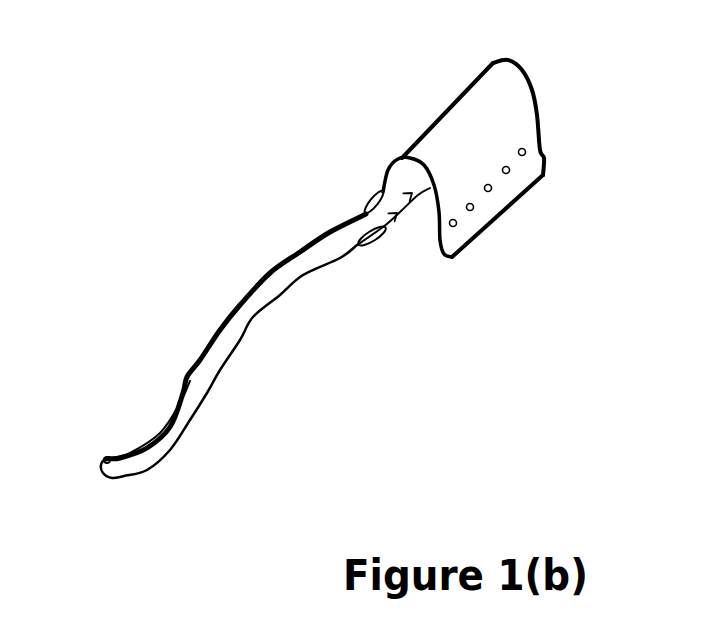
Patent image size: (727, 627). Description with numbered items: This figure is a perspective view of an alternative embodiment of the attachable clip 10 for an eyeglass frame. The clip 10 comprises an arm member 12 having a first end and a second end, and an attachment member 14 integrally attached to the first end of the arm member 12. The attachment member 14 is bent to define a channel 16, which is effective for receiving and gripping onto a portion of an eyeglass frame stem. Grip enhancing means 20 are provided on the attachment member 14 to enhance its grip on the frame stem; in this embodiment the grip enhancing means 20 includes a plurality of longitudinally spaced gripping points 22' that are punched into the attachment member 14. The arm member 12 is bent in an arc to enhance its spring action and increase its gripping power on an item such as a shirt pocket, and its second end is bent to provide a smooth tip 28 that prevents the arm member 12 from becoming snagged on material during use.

The attachable clip 10 is at (306, 125).
The arm member 12 is at (228, 345).
The attachment member 14 is at (483, 108).
The channel 16 is at (403, 242).
The grip enhancing means 20 is at (510, 165).
The gripping points 22' is at (422, 259).
The smooth tip 28 is at (95, 452).